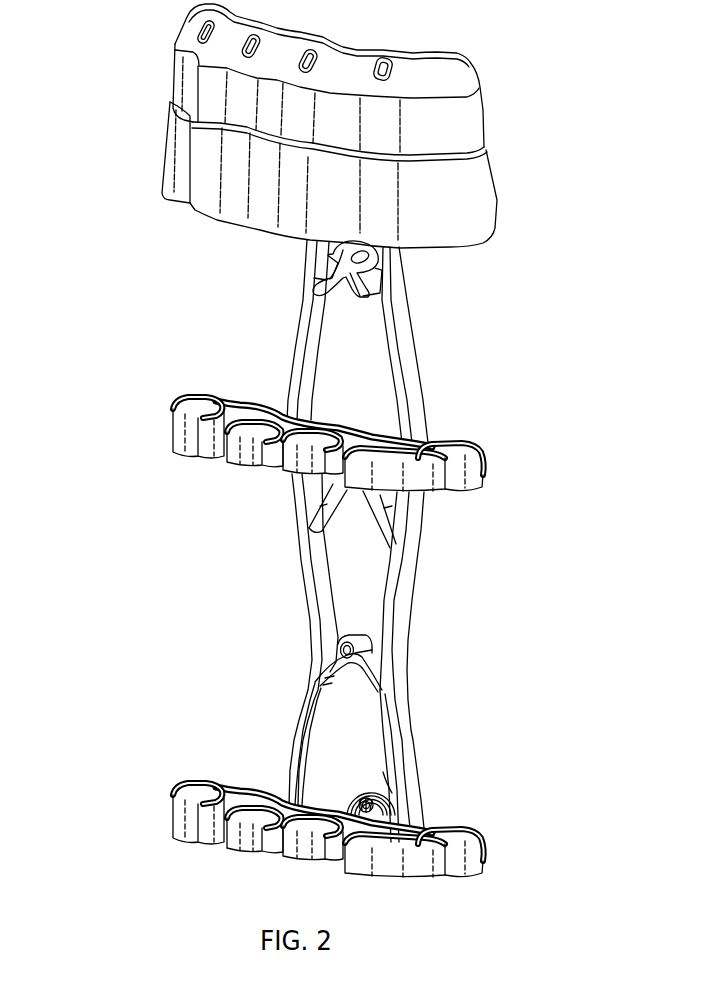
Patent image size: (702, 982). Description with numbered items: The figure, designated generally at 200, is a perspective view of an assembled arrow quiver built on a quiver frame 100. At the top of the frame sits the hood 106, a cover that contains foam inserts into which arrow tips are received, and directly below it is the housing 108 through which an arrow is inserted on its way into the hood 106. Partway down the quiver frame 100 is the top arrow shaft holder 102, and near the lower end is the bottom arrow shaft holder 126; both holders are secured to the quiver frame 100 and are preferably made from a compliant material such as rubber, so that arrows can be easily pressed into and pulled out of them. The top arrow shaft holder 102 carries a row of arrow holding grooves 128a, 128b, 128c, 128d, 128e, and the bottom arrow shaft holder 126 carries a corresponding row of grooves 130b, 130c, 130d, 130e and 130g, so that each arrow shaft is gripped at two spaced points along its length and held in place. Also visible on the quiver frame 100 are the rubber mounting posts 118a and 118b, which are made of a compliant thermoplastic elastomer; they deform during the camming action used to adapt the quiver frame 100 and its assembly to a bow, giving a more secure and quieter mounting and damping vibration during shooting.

The perspective view of quiver frame and quiver assembly 200 is at (88, 214).
The quiver frame 100 is at (423, 382).
The top arrow shaft holder 102 is at (474, 476).
The hood 106 is at (473, 117).
The housing 108 is at (483, 200).
The rubber mounting post 118a is at (338, 803).
The rubber mounting post 118b is at (383, 772).
The bottom arrow shaft holder 126 is at (343, 832).
The arrow holding groove 128a is at (448, 483).
The arrow holding groove 128b is at (203, 399).
The arrow holding groove 128c is at (222, 456).
The arrow holding groove 128d is at (278, 461).
The arrow holding groove 128e is at (332, 473).
The arrow holding groove 130b is at (187, 801).
The arrow holding groove 130c is at (225, 842).
The arrow holding groove 130d is at (284, 852).
The arrow holding groove 130e is at (364, 867).
The lower holder end loop 130g is at (462, 867).